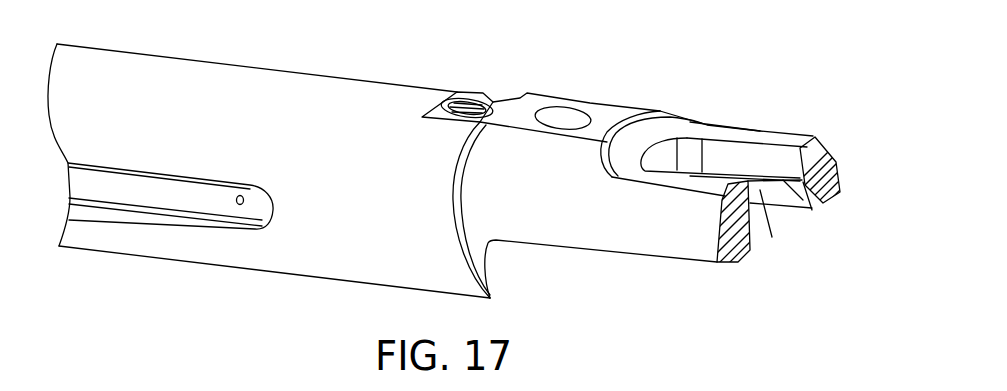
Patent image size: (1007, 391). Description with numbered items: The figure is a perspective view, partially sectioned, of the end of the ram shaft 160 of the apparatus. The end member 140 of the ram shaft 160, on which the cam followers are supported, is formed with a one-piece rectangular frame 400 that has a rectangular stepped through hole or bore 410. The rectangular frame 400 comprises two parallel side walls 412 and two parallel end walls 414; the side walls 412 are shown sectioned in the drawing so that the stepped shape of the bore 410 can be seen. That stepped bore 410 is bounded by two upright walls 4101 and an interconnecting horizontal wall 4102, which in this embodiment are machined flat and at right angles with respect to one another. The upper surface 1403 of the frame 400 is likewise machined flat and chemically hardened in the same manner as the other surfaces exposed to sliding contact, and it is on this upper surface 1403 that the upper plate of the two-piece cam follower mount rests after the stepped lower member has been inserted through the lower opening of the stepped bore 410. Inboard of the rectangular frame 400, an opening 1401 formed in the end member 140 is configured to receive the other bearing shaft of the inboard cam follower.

The ram shaft 160 is at (248, 85).
The end member 140 is at (598, 186).
The opening 1401 is at (565, 114).
The upper surface 1403 is at (760, 128).
The rectangular frame 400 is at (745, 184).
The stepped through bore 410 is at (715, 140).
The side walls 412 is at (820, 170).
The end walls 414 is at (663, 160).
The upright walls 4101 is at (772, 167).
The interconnecting horizontal wall 4102 is at (800, 182).